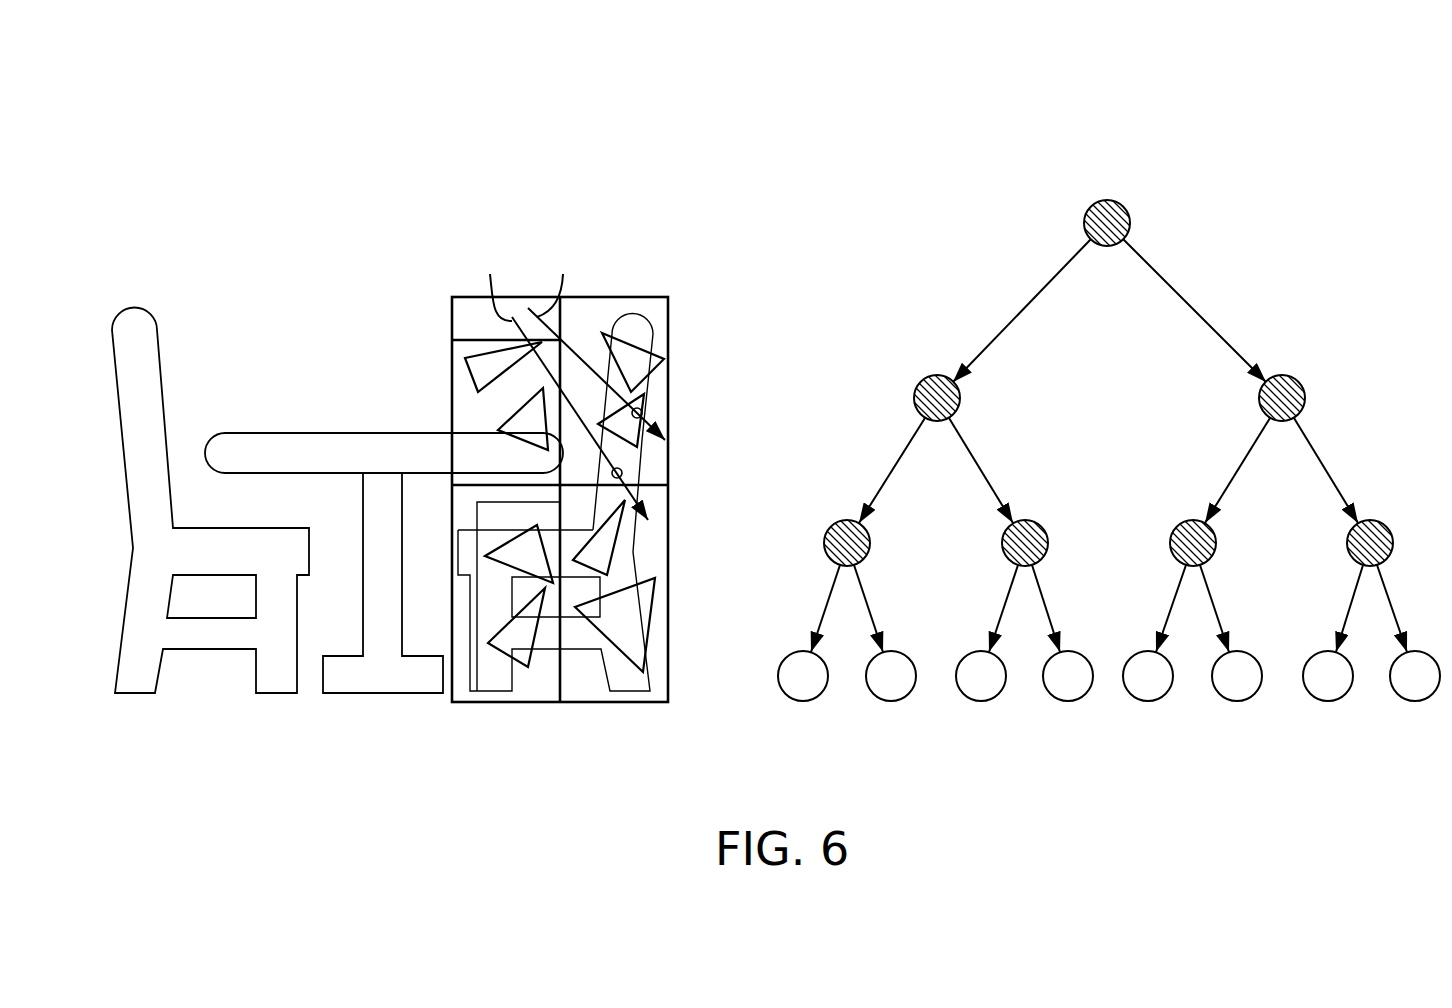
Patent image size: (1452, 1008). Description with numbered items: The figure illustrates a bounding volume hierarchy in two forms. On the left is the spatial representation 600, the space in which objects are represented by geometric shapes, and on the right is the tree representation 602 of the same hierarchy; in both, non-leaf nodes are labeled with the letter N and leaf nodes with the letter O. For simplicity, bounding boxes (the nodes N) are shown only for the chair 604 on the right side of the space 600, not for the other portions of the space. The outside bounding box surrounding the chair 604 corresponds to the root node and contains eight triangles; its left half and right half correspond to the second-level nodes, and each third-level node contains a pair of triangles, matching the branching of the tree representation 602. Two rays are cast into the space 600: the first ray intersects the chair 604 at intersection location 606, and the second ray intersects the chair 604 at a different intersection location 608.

The spatial representation 600 is at (192, 218).
The tree representation 602 is at (887, 142).
The chair 604 is at (645, 316).
The intersection location 606 is at (641, 410).
The intersection location 608 is at (621, 469).